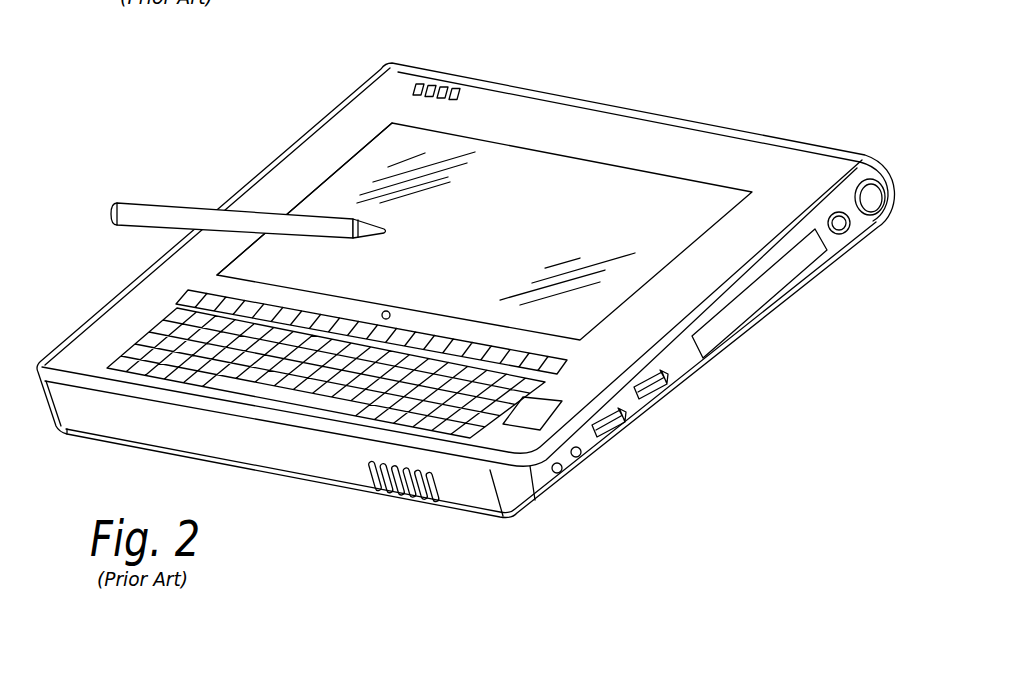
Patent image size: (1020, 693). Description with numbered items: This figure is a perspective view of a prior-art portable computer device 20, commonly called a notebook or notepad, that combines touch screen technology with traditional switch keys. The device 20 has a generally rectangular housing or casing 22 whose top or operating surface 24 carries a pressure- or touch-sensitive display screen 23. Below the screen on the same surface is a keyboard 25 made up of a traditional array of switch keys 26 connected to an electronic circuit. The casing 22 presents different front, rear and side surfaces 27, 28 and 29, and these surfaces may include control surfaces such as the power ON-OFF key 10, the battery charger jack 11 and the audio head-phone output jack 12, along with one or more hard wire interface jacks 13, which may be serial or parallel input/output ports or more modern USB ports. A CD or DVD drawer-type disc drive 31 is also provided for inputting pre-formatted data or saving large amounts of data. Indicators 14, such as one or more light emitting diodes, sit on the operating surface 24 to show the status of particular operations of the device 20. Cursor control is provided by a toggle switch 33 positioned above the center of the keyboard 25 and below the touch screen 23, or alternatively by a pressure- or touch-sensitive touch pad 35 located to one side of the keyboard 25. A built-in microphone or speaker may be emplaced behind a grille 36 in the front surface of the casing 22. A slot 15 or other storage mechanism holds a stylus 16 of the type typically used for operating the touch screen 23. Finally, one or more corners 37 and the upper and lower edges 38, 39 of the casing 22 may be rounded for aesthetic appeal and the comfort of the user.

The power ON-OFF key 10 is at (840, 224).
The battery charger jack 11 is at (560, 472).
The audio head-phone output jack 12 is at (580, 457).
The hard wire interface jacks 13 is at (650, 398).
The indicators 14 is at (483, 78).
The slot 15 is at (870, 203).
The stylus 16 is at (148, 228).
The portable computer device 20 is at (263, 90).
The housing or casing 22 is at (365, 82).
The display screen 23 is at (366, 148).
The operating surface 24 is at (272, 188).
The keyboard 25 is at (110, 350).
The switch keys 26 is at (138, 348).
The front surface 27 is at (192, 435).
The rear surface 28 is at (750, 130).
The side surface 29 is at (680, 367).
The disc drive 31 is at (712, 337).
The toggle switch 33 is at (390, 313).
The touch pad 35 is at (562, 408).
The grille 36 is at (372, 474).
The corners 37 is at (522, 503).
The upper edge 38 is at (333, 437).
The lower edge 39 is at (82, 433).